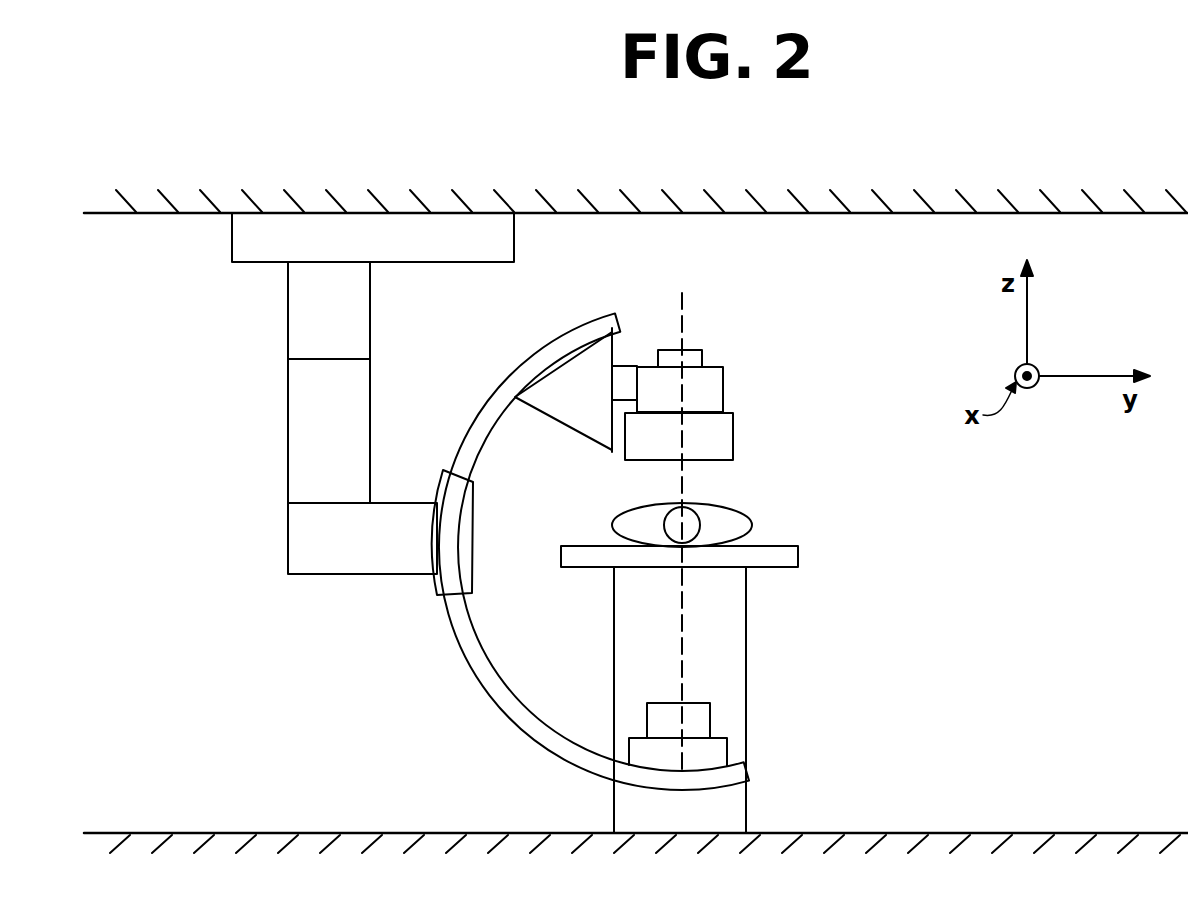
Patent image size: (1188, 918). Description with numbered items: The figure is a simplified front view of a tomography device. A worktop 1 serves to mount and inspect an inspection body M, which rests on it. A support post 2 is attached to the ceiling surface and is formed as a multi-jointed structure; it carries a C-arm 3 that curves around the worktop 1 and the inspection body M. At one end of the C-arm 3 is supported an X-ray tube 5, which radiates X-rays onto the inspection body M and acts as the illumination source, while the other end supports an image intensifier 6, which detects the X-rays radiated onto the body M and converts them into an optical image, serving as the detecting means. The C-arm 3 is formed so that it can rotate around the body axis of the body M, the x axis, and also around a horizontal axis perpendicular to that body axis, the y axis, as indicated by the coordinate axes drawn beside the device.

The table 1 is at (795, 560).
The ceiling support column 2 is at (287, 472).
The C-arm 3 is at (510, 695).
The X-ray detector unit 5 is at (722, 740).
The X-ray source unit 6 is at (710, 385).
The subject M is at (717, 505).